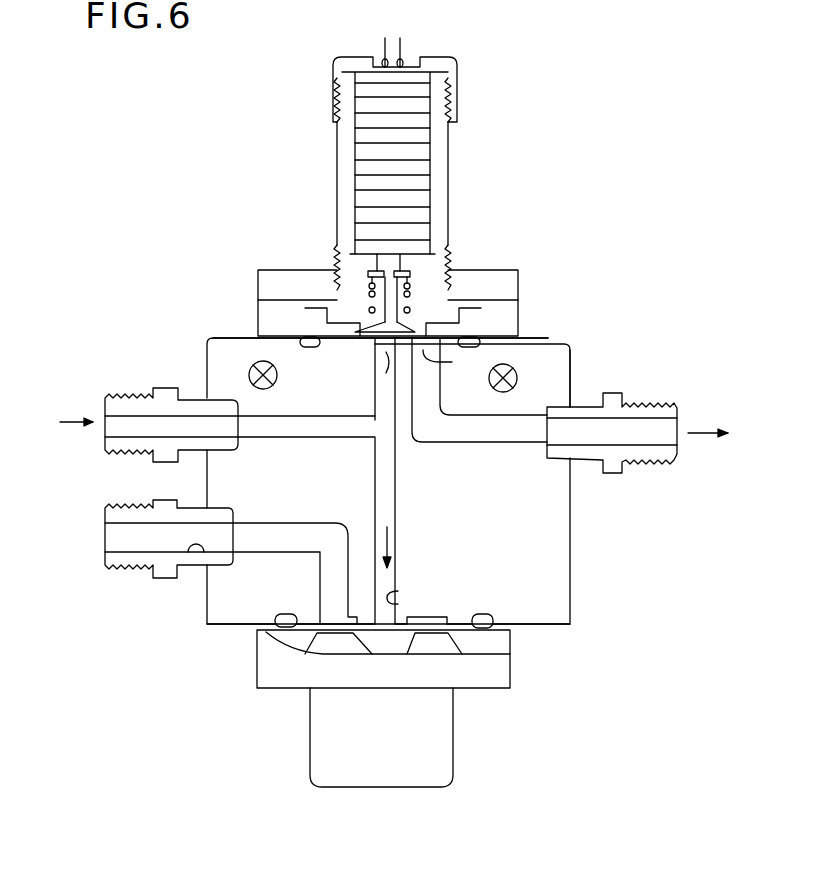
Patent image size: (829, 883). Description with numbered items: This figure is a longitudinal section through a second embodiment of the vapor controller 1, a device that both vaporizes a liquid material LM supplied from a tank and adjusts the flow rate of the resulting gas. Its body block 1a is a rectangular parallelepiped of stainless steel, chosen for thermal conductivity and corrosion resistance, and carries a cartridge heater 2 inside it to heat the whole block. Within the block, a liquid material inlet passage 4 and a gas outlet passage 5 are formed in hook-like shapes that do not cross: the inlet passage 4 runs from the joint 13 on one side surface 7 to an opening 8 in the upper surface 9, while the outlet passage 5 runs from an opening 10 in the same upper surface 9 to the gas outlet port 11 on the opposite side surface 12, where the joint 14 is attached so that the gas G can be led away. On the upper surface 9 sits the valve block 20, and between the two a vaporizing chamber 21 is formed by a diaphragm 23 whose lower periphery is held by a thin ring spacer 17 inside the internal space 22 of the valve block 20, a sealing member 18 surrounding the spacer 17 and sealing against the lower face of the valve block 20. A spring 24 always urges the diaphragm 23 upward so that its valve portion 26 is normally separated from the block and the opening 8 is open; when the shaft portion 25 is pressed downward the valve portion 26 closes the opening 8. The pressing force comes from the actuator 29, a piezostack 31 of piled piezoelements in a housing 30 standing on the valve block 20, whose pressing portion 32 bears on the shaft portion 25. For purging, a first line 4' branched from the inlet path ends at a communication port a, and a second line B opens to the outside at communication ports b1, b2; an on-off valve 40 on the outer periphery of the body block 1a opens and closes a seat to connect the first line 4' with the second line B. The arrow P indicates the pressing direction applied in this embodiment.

The vapor controller 1 is at (594, 112).
The body block 1a is at (226, 626).
The cartridge heater 2 is at (516, 369).
The liquid material inlet passage 4 is at (306, 406).
The first line 4' is at (377, 481).
The gas outlet passage 5 is at (447, 435).
The side surface 7 is at (204, 370).
The opening 8 is at (382, 372).
The upper surface 9 is at (213, 338).
The opening 10 is at (474, 346).
The gas outlet port 11 is at (572, 436).
The side surface 12 is at (572, 378).
The joint 13 is at (152, 393).
The joint 14 is at (622, 466).
The ring spacer 17 is at (348, 330).
The sealing member 18 is at (326, 337).
The valve block 20 is at (505, 272).
The vaporizing chamber 21 is at (460, 330).
The internal space 22 is at (414, 322).
The diaphragm 23 is at (372, 270).
The spring 24 is at (411, 285).
The shaft portion 25 is at (404, 270).
The valve portion 26 is at (378, 323).
The actuator 29 is at (333, 86).
The housing 30 is at (337, 143).
The piezostack 31 is at (433, 80).
The pressing portion 32 is at (377, 247).
The on-off valve 40 is at (455, 726).
The second line B is at (262, 540).
The communication port b1 is at (332, 628).
The communication port b2 is at (195, 549).
The communication port a is at (398, 598).
The pilot pressure direction P is at (391, 544).
The gas G is at (702, 432).
The liquid material LM is at (68, 422).